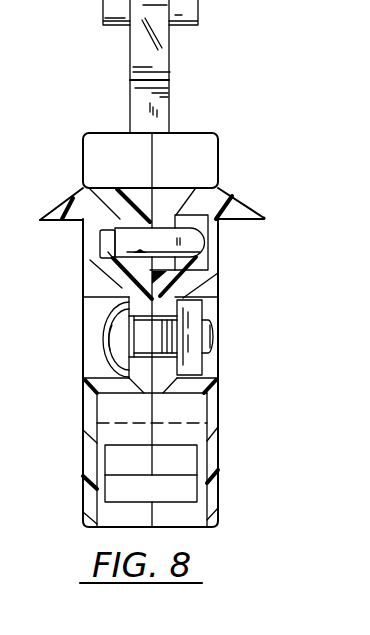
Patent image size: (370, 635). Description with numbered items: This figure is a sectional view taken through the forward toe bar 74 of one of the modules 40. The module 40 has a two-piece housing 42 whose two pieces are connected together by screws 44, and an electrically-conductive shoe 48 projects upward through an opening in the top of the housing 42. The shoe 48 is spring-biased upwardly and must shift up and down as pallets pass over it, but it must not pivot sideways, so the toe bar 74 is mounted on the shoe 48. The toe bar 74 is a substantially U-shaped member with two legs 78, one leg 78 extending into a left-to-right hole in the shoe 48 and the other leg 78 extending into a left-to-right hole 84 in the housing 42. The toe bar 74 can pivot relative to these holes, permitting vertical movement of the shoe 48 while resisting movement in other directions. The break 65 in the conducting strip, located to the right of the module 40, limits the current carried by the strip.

The module 40 is at (96, 106).
The housing 42 is at (83, 162).
The screws 44 is at (112, 332).
The shoe 48 is at (170, 72).
The break 65 is at (157, 47).
The forward toe bar 74 is at (213, 243).
The leg 78 is at (100, 245).
The hole 84 is at (128, 260).